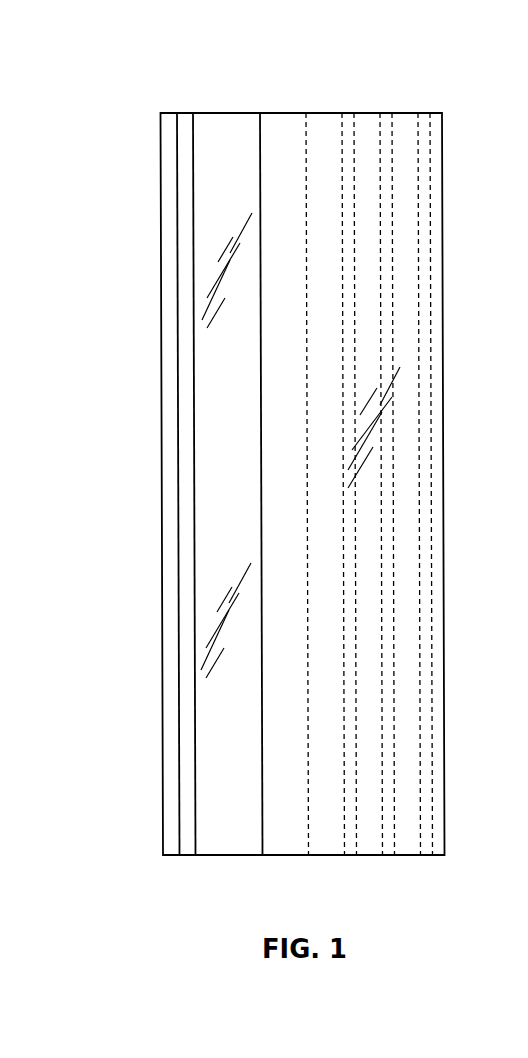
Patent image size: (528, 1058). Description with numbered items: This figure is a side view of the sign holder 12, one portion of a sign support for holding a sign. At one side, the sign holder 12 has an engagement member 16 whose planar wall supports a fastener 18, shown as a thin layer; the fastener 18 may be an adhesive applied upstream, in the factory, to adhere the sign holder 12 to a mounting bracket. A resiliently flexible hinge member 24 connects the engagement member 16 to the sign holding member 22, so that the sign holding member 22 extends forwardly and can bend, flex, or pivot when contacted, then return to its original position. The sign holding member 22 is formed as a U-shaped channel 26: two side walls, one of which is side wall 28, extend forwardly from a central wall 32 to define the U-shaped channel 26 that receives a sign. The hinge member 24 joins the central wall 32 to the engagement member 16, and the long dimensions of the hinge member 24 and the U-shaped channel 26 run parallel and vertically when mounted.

The sign holder 12 is at (138, 78).
The engagement member 16 is at (188, 785).
The fastener 18 is at (170, 197).
The sign holding member 22 is at (365, 113).
The hinge member 24 is at (225, 122).
The U-shaped channel 26 is at (453, 380).
The side wall 28 is at (368, 842).
The central wall 32 is at (260, 757).